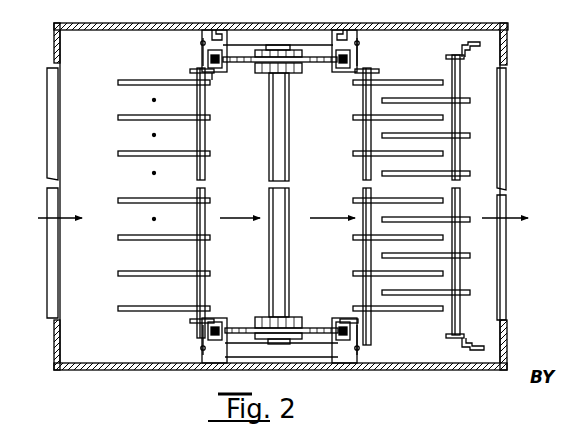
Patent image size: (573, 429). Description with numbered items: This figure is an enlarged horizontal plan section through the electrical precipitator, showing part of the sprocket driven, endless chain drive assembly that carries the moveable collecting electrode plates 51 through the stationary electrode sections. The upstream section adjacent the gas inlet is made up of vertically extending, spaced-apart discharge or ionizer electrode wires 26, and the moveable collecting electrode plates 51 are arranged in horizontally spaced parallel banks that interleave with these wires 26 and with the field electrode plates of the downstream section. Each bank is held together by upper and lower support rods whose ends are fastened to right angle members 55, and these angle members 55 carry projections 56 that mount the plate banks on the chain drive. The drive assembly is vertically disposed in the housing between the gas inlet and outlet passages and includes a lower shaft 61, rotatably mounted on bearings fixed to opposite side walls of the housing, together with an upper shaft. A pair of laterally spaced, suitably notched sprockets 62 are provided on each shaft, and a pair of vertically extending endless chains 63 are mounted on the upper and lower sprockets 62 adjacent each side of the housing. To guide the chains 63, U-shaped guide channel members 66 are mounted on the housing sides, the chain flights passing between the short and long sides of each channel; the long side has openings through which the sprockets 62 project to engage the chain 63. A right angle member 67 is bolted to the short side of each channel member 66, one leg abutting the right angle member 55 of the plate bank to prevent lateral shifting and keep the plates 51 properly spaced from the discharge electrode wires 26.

The discharge electrode wires 26 is at (152, 255).
The collecting electrode plates 51 is at (124, 80).
The right angle members 55 is at (192, 70).
The projections 56 is at (217, 50).
The lower shaft 61 is at (288, 159).
The sprockets 62 is at (324, 62).
The endless chains 63 is at (220, 68).
The guide channel members 66 is at (212, 32).
The right angle member 67 is at (203, 52).